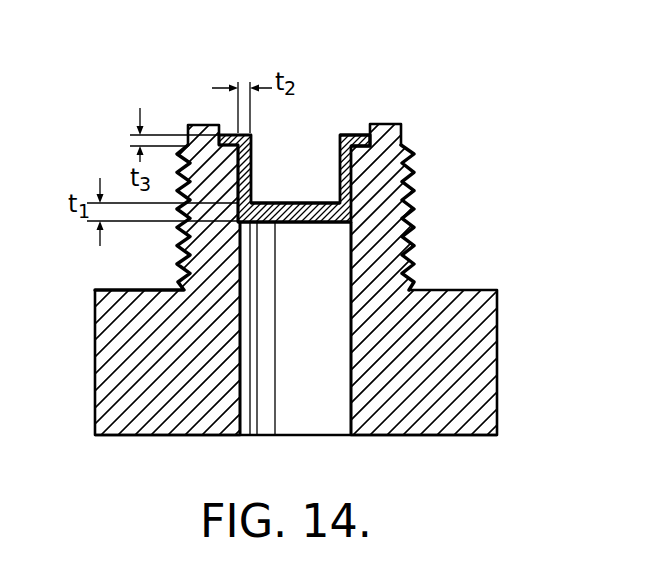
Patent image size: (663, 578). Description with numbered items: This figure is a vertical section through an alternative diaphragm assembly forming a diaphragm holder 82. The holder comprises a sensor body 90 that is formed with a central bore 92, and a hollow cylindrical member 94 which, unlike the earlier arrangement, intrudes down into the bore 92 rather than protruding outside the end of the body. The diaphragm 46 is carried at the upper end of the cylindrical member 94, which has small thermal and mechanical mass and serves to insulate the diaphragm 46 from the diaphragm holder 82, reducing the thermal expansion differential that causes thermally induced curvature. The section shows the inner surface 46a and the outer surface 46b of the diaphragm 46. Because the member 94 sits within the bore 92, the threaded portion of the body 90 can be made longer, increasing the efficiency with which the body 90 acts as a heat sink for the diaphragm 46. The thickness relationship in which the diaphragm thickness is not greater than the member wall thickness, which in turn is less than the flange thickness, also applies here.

The diaphragm holder 82 is at (296, 233).
The sensor body 90 is at (447, 290).
The central bore 92 is at (322, 320).
The diaphragm 46 is at (313, 203).
The liner inner bottom surface 46a is at (273, 203).
The liner outer bottom surface 46b is at (285, 222).
The hollow cylindrical member 94 is at (340, 147).